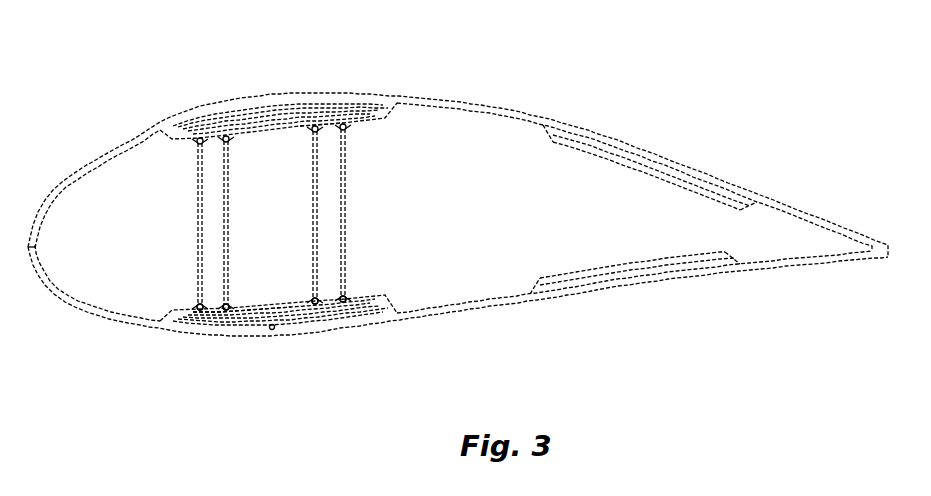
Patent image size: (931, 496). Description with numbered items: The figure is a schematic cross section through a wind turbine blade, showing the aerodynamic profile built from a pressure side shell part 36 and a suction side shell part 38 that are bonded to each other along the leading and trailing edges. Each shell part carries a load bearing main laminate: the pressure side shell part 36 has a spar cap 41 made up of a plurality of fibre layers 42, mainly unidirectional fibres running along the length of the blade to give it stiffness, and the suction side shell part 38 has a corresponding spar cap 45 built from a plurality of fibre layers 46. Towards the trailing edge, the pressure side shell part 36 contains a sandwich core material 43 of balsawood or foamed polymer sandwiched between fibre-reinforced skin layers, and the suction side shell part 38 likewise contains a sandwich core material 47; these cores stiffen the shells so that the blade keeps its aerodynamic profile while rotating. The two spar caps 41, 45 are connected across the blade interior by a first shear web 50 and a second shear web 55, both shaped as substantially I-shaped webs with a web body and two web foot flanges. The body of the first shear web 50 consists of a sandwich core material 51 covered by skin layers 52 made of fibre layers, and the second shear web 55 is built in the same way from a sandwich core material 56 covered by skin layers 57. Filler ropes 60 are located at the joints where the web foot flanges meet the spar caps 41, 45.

The pressure side shell part 36 is at (506, 304).
The suction side shell part 38 is at (490, 109).
The spar cap 41 is at (353, 335).
The fibre layers 42 is at (270, 335).
The sandwich core material 43 is at (645, 272).
The spar cap 45 is at (246, 97).
The fibre layers 46 is at (322, 96).
The sandwich core material 47 is at (641, 154).
The first shear web 50 is at (235, 223).
The sandwich core material 51 is at (228, 243).
The skin layers 52 is at (230, 170).
The second shear web 55 is at (357, 214).
The sandwich core material of second shear web 56 is at (346, 233).
The skin layers of second shear web 57 is at (348, 189).
The filler ropes 60 is at (310, 132).